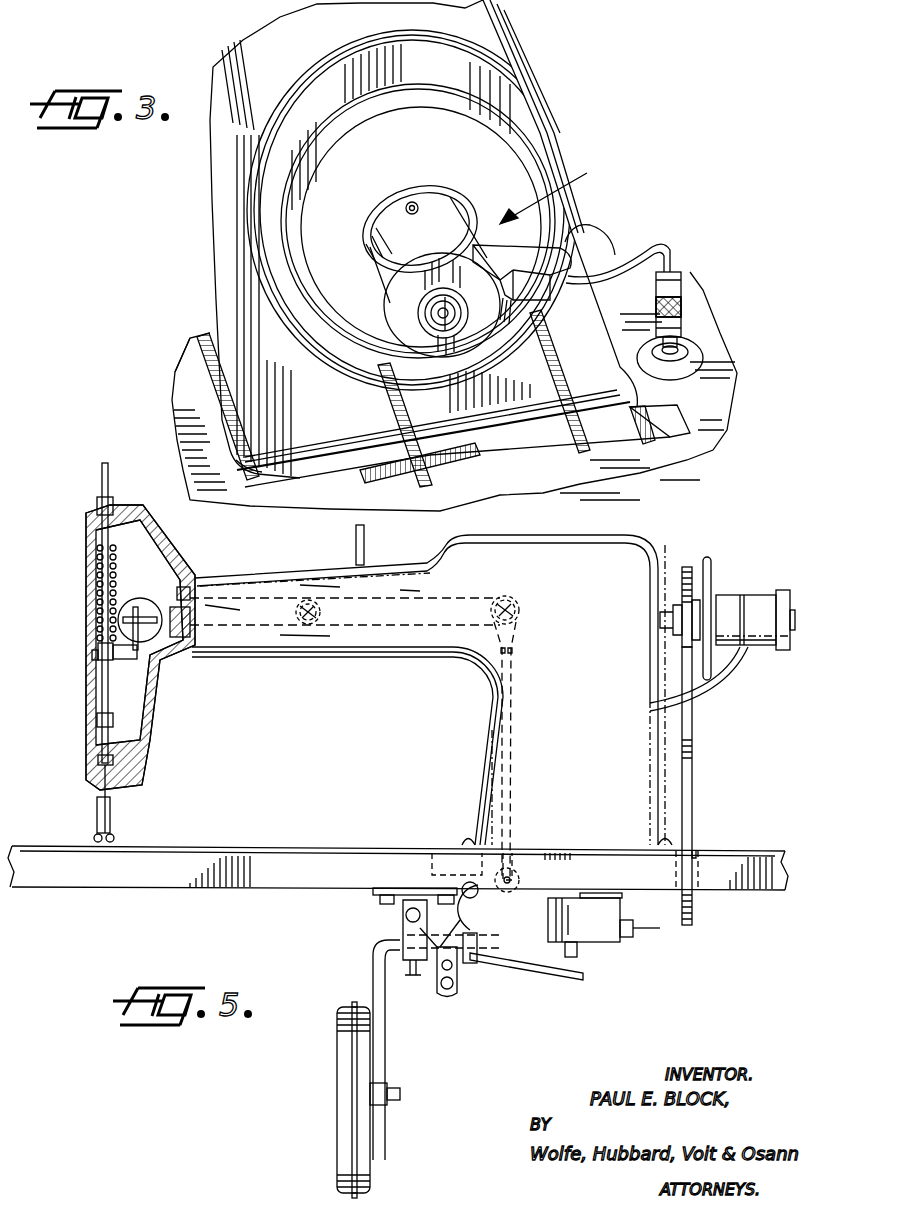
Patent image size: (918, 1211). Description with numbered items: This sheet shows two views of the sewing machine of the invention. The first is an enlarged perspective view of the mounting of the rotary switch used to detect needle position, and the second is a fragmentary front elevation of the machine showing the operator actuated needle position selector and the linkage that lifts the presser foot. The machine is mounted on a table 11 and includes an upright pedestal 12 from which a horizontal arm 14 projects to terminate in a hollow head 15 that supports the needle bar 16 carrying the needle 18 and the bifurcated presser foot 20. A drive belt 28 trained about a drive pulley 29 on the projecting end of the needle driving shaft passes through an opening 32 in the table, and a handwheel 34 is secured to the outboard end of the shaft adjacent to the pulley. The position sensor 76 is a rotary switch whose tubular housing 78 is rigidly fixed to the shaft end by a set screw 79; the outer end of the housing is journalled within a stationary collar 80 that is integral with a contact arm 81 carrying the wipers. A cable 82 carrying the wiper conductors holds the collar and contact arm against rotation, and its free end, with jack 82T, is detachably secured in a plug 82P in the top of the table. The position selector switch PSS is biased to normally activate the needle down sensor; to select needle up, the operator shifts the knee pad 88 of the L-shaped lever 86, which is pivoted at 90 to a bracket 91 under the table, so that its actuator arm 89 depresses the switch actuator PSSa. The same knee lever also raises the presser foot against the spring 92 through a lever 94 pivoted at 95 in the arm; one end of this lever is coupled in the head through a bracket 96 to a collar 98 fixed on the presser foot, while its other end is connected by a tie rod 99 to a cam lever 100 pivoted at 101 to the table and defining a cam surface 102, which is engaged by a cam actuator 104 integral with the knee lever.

In FIG. 3, the table 11 is at (200, 440).
In FIG. 5, the table 11 is at (52, 860).
In FIG. 3, the upright pedestal 12 is at (215, 252).
In FIG. 5, the upright pedestal 12 is at (517, 770).
In FIG. 5, the horizontal arm 14 is at (267, 577).
In FIG. 5, the hollow head 15 is at (155, 690).
In FIG. 5, the needle bar 16 is at (100, 750).
In FIG. 5, the sewing machine needle 18 is at (108, 812).
In FIG. 5, the presser foot 20 is at (112, 838).
In FIG. 3, the drive belt 28 is at (390, 417).
In FIG. 5, the drive belt 28 is at (693, 798).
In FIG. 5, the drive pulley 29 is at (675, 567).
In FIG. 3, the opening 32 is at (443, 460).
In FIG. 5, the opening 32 is at (698, 853).
In FIG. 3, the handwheel 34 is at (270, 200).
In FIG. 5, the handwheel 34 is at (708, 558).
In FIG. 3, the position sensor 76 is at (556, 195).
In FIG. 3, the tubular housing 78 is at (428, 203).
In FIG. 5, the tubular housing 78 is at (728, 597).
In FIG. 3, the set screw 79 is at (405, 205).
In FIG. 3, the stationary collar 80 is at (383, 288).
In FIG. 5, the stationary collar 80 is at (784, 590).
In FIG. 3, the contact arm 81 is at (572, 228).
In FIG. 3, the cable 82 is at (665, 243).
In FIG. 5, the cable 82 is at (730, 660).
In FIG. 3, the cable connector 82T is at (682, 287).
In FIG. 3, the plug 82P is at (690, 350).
In FIG. 5, the knee actuated L-shaped lever 86 is at (385, 1020).
In FIG. 5, the knee pad 88 is at (338, 1163).
In FIG. 5, the actuator arm 89 is at (573, 977).
In FIG. 5, the pivot 90 is at (453, 967).
In FIG. 5, the bracket 91 is at (407, 927).
In FIG. 5, the spring 92 is at (100, 590).
In FIG. 5, the lever 94 is at (375, 630).
In FIG. 5, the pivot 95 is at (312, 628).
In FIG. 5, the bracket 96 is at (140, 655).
In FIG. 5, the collar 98 is at (100, 660).
In FIG. 5, the tie rod 99 is at (490, 812).
In FIG. 5, the lever 100 is at (490, 893).
In FIG. 5, the pivot 101 is at (490, 897).
In FIG. 5, the cam surface 102 is at (497, 940).
In FIG. 5, the cam actuator 104 is at (408, 953).
In FIG. 5, the position selector switch PSS is at (607, 937).
In FIG. 5, the switch actuator PSSa is at (580, 957).